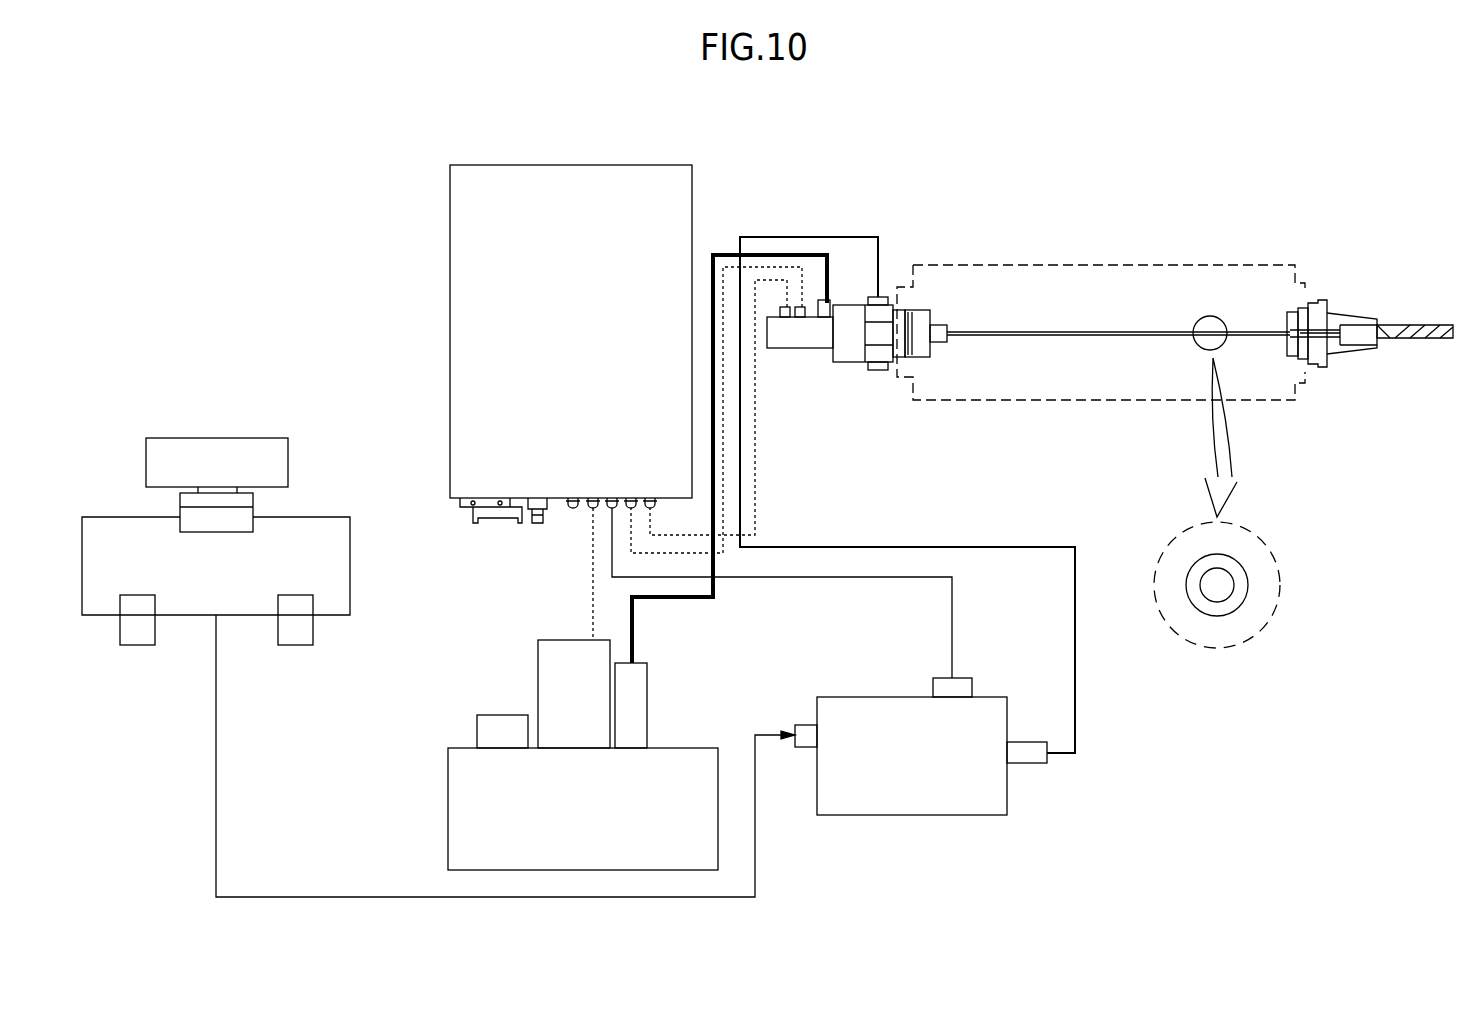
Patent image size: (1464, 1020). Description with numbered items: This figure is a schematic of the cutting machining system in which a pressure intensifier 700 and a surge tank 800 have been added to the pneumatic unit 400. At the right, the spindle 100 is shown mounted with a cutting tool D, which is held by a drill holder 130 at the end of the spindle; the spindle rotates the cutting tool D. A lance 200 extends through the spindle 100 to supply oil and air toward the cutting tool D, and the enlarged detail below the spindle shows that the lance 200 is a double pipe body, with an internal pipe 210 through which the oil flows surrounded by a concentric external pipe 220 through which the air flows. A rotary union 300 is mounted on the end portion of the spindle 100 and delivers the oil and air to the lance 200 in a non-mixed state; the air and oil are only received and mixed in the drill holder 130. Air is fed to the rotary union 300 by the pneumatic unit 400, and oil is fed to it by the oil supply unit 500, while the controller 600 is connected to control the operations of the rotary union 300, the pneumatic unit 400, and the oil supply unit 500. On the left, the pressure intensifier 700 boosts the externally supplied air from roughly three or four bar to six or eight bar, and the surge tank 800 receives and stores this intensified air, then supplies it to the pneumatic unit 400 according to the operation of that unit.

The spindle 100 is at (1077, 265).
The drill holder 130 is at (1322, 305).
The lance 200 is at (1009, 333).
The internal pipe 210 is at (1215, 583).
The external pipe 220 is at (1232, 612).
The rotary union 300 is at (845, 355).
The pneumatic unit 400 is at (827, 712).
The oil supply unit 500 is at (473, 813).
The controller 600 is at (473, 280).
The pressure intensifier 700 is at (215, 453).
The surge tank 800 is at (325, 533).
The cutting tool D is at (1410, 330).